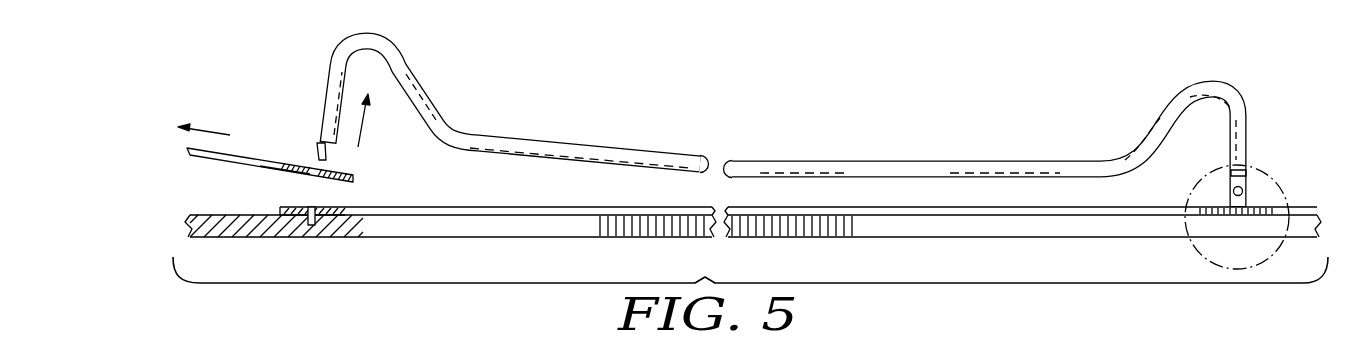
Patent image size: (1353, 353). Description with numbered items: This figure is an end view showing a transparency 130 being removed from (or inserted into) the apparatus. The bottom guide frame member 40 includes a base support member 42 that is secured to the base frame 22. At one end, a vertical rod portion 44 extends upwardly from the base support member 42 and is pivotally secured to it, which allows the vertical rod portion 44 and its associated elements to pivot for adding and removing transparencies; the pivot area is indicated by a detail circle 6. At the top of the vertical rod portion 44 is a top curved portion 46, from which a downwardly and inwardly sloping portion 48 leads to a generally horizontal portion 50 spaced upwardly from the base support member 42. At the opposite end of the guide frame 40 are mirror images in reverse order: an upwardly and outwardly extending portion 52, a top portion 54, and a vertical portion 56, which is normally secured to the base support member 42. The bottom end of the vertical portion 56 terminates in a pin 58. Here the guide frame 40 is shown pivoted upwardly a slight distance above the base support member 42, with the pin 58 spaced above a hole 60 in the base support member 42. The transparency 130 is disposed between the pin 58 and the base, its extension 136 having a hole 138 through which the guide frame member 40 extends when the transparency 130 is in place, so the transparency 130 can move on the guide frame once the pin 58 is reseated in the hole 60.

The detail circle of FIG. 6 is at (1258, 168).
The base frame 22 is at (957, 237).
The bottom guide frame member 40 is at (823, 164).
The base support member 42 is at (403, 207).
The vertical rod portion 44 is at (1250, 140).
The top curved portion 46 is at (1235, 93).
The sloping portion 48 is at (1153, 132).
The horizontal portion 50 is at (982, 168).
The upwardly and outwardly extending portion 52 is at (437, 121).
The top portion 54 is at (388, 45).
The vertical portion 56 is at (328, 80).
The pin 58 is at (317, 154).
The hole 60 is at (312, 208).
The transparency 130 is at (245, 156).
The extension 136 is at (345, 172).
The hole 138 is at (308, 180).